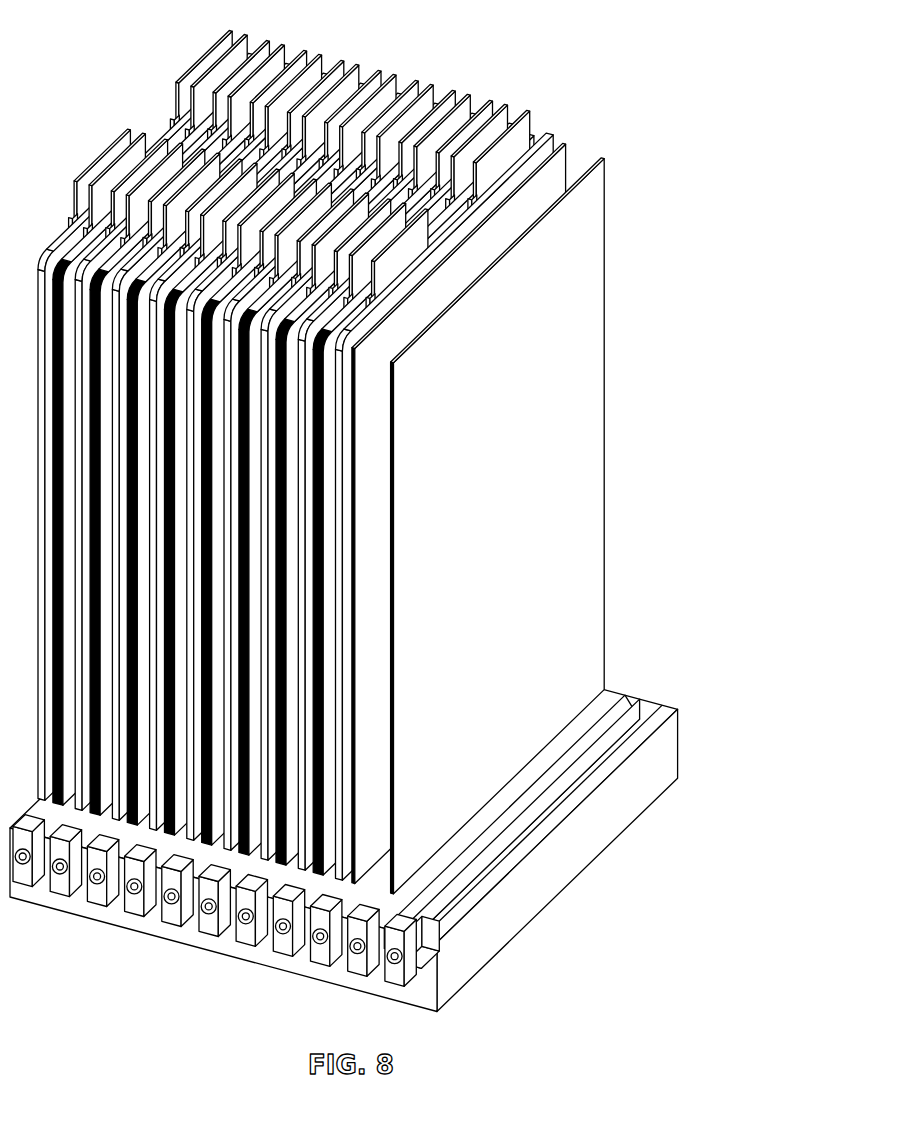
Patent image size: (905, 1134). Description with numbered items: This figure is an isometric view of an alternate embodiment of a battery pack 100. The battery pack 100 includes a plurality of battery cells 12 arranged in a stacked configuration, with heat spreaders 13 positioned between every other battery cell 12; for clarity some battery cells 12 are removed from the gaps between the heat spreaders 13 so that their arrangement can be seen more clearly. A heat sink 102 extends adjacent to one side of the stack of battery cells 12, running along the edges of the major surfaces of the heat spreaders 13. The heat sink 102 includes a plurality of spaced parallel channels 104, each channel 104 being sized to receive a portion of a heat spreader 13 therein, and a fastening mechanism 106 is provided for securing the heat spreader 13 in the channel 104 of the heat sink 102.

The battery pack 100 is at (344, 533).
The battery cell 12 is at (337, 858).
The heat spreader 13 is at (499, 550).
The heat sink 102 is at (537, 893).
The channel 104 is at (408, 970).
The connector 106 is at (68, 893).